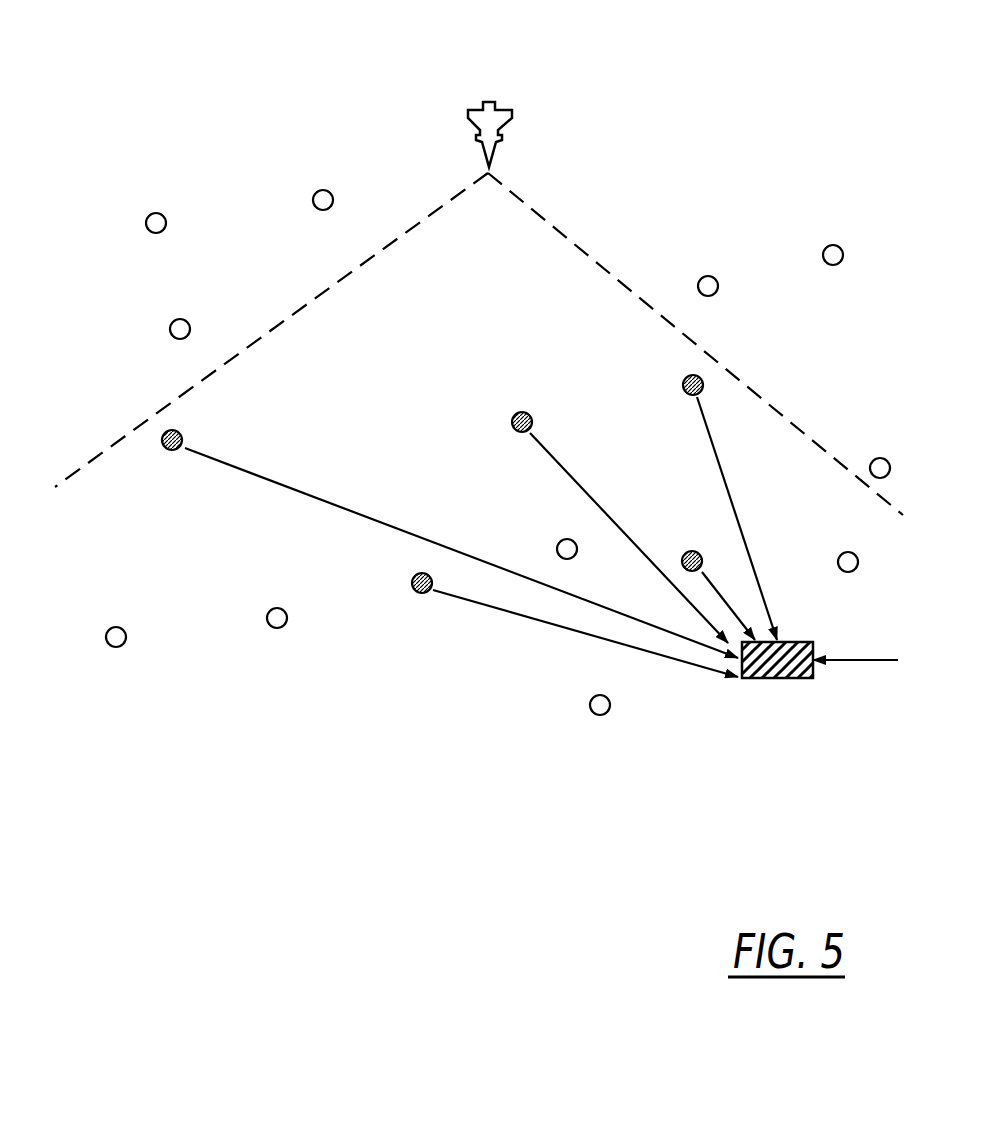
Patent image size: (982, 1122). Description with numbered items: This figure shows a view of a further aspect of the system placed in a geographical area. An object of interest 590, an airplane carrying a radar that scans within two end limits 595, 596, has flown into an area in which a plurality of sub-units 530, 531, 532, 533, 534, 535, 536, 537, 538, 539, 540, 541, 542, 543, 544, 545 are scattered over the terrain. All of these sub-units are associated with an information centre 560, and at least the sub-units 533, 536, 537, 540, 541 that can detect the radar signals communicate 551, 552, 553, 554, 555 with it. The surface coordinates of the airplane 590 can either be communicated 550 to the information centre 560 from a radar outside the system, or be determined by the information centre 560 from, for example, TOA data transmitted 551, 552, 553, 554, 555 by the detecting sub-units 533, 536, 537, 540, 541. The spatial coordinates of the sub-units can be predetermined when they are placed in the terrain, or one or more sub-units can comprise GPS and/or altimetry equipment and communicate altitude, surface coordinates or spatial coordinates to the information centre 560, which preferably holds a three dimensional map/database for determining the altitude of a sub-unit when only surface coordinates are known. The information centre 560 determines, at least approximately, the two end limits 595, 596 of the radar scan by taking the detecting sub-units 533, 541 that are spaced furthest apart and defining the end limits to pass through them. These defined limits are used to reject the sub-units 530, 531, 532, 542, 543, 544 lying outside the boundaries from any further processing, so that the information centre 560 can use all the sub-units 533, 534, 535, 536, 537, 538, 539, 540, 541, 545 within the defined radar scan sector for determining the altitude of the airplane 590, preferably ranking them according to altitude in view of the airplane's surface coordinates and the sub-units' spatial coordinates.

The sub-unit 530 is at (150, 208).
The sub-unit 531 is at (319, 185).
The sub-unit 532 is at (185, 315).
The sub-unit 533 is at (187, 437).
The sub-unit 534 is at (112, 652).
The sub-unit 535 is at (272, 635).
The sub-unit 536 is at (413, 595).
The sub-unit 537 is at (508, 427).
The sub-unit 538 is at (553, 550).
The sub-unit 539 is at (593, 718).
The sub-unit 540 is at (683, 543).
The sub-unit 541 is at (680, 393).
The sub-unit 542 is at (707, 273).
The sub-unit 543 is at (828, 240).
The sub-unit 544 is at (875, 452).
The sub-unit 545 is at (835, 568).
The communication of surface coordinates 550 is at (865, 662).
The communication 551 is at (500, 610).
The communication 552 is at (567, 593).
The communication 553 is at (658, 577).
The communication 554 is at (713, 587).
The communication 555 is at (760, 578).
The information centre 560 is at (782, 680).
The object of interest 590 is at (503, 107).
The end limit 595 is at (432, 207).
The end limit 596 is at (563, 232).